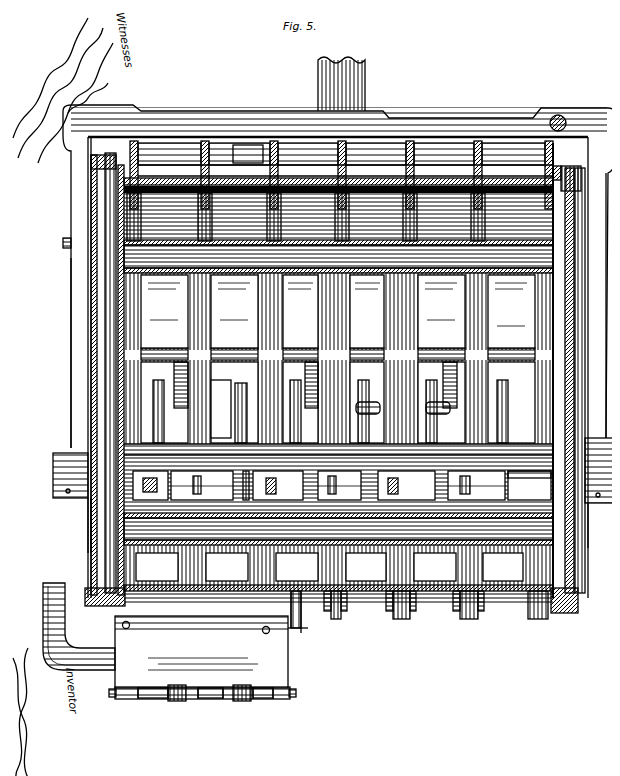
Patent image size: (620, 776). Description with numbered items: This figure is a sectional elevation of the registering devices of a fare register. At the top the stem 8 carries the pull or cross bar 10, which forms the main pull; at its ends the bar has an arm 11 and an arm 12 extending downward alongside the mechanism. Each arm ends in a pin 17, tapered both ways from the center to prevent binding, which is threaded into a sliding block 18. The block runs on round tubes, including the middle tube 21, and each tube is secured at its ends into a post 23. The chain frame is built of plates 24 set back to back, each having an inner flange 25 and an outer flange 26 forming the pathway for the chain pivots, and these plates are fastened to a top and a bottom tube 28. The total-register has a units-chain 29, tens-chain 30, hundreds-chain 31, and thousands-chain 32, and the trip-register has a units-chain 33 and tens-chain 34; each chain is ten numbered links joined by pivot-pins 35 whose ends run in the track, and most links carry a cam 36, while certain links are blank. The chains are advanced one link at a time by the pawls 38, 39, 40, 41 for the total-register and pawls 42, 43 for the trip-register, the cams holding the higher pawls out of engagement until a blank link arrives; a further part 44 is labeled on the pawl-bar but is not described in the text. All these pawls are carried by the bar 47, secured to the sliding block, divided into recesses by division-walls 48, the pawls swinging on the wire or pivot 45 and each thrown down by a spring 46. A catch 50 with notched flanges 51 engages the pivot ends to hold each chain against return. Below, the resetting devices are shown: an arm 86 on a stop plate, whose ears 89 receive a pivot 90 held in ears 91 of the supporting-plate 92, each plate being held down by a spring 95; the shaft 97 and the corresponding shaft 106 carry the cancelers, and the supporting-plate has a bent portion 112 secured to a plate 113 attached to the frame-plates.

The stem 8 is at (358, 70).
The pull or cross bar 10 is at (430, 123).
The arm 11 is at (70, 275).
The arm 12 is at (582, 274).
The pin 17 is at (48, 462).
The sliding block 18 is at (80, 512).
The middle tube 21 is at (88, 330).
The post 23 is at (83, 153).
The plate 24 is at (325, 612).
The inner flange 25 is at (340, 600).
The outer flange 26 is at (338, 600).
The top and bottom tube 28 is at (338, 392).
The units-chain 29 is at (300, 311).
The tens-chain 30 is at (367, 311).
The hundreds-chain 31 is at (441, 311).
The thousands-chain 32 is at (511, 311).
The units-chain 33 is at (164, 311).
The tens-chain 34 is at (234, 311).
The pivot-pin 35 is at (248, 148).
The cam 36 is at (335, 357).
The pawl 38 is at (298, 402).
The pawl 39 is at (351, 412).
The pawl 40 is at (426, 403).
The pawl 41 is at (484, 412).
The pawl 42 is at (165, 402).
The pawl 43 is at (221, 411).
The lug 44 is at (399, 405).
The wire or pivot 45 is at (505, 466).
The spring 46 is at (185, 470).
The bar 47 is at (248, 470).
The division-wall 48 is at (118, 475).
The catch 50 is at (145, 140).
The flange 51 is at (128, 150).
The arm 86 is at (36, 596).
The ear 89 is at (142, 693).
The pivot 90 is at (102, 686).
The ear 91 is at (125, 692).
The supporting-plate 92 is at (201, 652).
The spring 95 is at (168, 693).
The shaft 97 is at (121, 620).
The shaft 106 is at (258, 626).
The portion 112 is at (293, 612).
The plate 113 is at (298, 624).